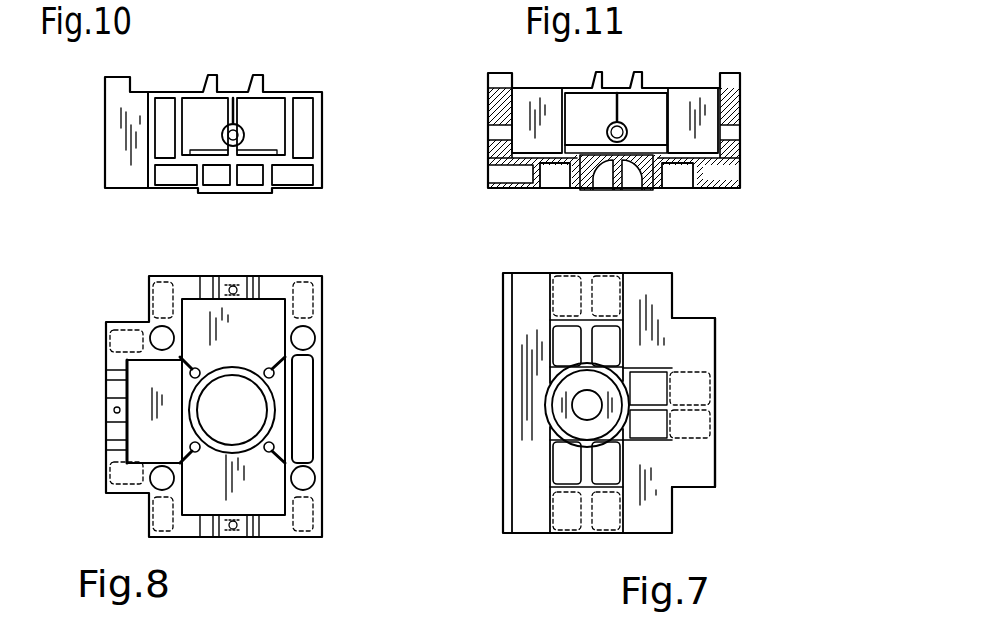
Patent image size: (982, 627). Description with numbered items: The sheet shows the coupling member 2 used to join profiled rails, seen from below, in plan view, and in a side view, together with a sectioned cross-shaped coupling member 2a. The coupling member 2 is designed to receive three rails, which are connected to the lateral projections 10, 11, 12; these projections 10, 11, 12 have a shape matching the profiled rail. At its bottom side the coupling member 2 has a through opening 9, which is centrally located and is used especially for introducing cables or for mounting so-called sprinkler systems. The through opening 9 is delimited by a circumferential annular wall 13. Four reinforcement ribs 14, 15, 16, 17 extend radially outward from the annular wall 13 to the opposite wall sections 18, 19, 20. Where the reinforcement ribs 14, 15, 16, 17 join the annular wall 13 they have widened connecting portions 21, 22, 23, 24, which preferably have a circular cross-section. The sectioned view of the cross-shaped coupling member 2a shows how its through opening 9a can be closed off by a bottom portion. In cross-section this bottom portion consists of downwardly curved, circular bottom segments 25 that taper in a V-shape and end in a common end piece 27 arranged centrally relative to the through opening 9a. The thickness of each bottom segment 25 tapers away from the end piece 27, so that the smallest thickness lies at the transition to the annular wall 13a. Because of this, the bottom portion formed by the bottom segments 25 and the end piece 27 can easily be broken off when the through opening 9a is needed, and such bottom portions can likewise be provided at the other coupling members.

In FIG. 10, the coupling member 2 is at (327, 97).
In FIG. 8, the coupling member 2 is at (309, 274).
In FIG. 7, the coupling member 2 is at (684, 298).
In FIG. 11, the cross-shaped coupling member 2a is at (749, 102).
In FIG. 8, the through opening 9 is at (256, 402).
In FIG. 7, the through opening 9 is at (604, 390).
In FIG. 11, the through opening 9a is at (562, 178).
In FIG. 8, the lateral projection 10 is at (105, 478).
In FIG. 7, the lateral projection 10 is at (717, 453).
In FIG. 8, the lateral projection 11 is at (275, 276).
In FIG. 7, the lateral projection 11 is at (536, 536).
In FIG. 10, the lateral projection 12 is at (272, 190).
In FIG. 8, the lateral projection 12 is at (310, 537).
In FIG. 7, the lateral projection 12 is at (636, 272).
In FIG. 8, the annular wall 13 is at (276, 410).
In FIG. 7, the annular wall 13 is at (626, 428).
In FIG. 11, the annular wall 13a is at (660, 177).
In FIG. 8, the reinforcement rib 14 is at (273, 447).
In FIG. 8, the reinforcement rib 15 is at (286, 353).
In FIG. 8, the reinforcement rib 16 is at (189, 362).
In FIG. 8, the reinforcement rib 17 is at (181, 462).
In FIG. 8, the wall section 18 is at (272, 374).
In FIG. 8, the wall section 19 is at (180, 316).
In FIG. 8, the wall section 20 is at (153, 478).
In FIG. 8, the widened connecting portion 21 is at (269, 451).
In FIG. 8, the widened connecting portion 22 is at (267, 367).
In FIG. 8, the widened connecting portion 23 is at (191, 376).
In FIG. 8, the widened connecting portion 24 is at (191, 444).
In FIG. 11, the bottom segment 25 is at (563, 160).
In FIG. 11, the end piece 27 is at (623, 183).